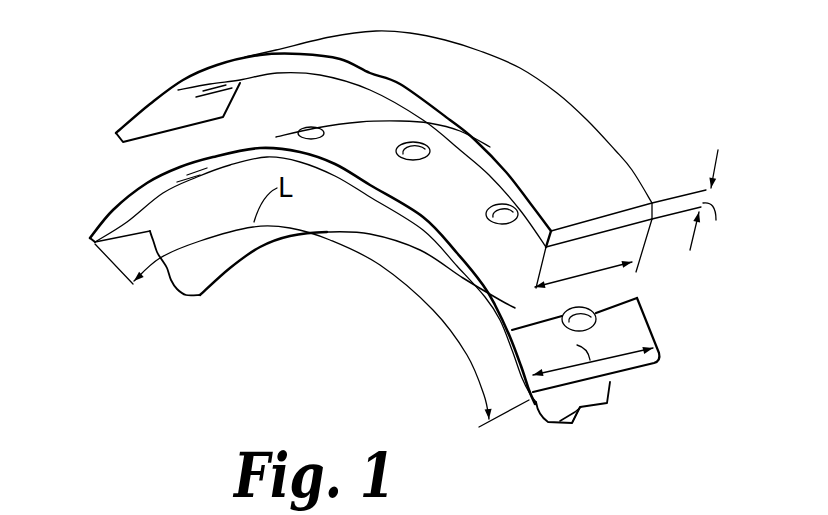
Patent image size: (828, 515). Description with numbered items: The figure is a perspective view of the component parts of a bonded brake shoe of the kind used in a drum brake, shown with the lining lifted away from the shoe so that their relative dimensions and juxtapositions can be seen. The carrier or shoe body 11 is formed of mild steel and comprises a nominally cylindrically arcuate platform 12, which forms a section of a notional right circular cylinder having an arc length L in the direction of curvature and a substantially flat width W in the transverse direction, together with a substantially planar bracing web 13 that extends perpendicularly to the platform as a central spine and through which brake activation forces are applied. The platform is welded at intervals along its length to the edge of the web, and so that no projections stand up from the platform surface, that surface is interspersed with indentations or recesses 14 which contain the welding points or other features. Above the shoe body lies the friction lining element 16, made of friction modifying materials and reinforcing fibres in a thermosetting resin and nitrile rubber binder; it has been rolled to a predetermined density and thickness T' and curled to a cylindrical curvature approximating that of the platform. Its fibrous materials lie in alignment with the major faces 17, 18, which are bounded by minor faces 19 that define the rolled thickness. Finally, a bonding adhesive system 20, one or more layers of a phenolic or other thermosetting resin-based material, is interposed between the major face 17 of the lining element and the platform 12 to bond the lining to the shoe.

The shoe body 11 is at (307, 294).
The platform 12 is at (652, 377).
The bracing web 13 is at (573, 424).
The recesses 14 is at (404, 146).
The friction lining element 16 is at (394, 157).
The major face 17 is at (158, 115).
The major face 18 is at (318, 50).
The minor faces 19 is at (168, 93).
The bonding adhesive system 20 is at (519, 306).